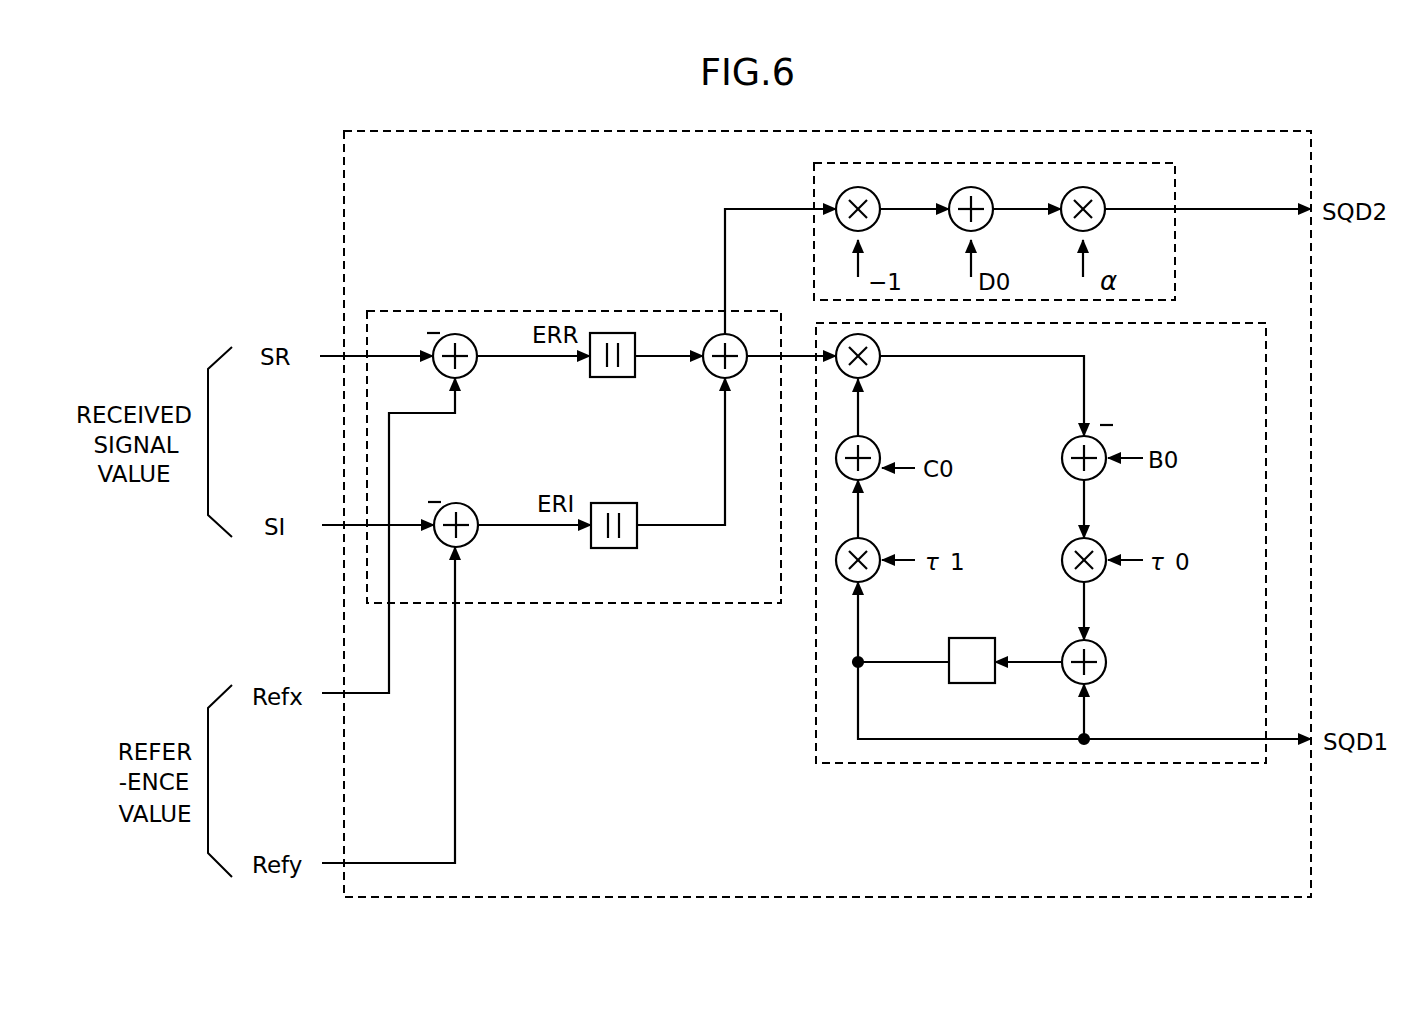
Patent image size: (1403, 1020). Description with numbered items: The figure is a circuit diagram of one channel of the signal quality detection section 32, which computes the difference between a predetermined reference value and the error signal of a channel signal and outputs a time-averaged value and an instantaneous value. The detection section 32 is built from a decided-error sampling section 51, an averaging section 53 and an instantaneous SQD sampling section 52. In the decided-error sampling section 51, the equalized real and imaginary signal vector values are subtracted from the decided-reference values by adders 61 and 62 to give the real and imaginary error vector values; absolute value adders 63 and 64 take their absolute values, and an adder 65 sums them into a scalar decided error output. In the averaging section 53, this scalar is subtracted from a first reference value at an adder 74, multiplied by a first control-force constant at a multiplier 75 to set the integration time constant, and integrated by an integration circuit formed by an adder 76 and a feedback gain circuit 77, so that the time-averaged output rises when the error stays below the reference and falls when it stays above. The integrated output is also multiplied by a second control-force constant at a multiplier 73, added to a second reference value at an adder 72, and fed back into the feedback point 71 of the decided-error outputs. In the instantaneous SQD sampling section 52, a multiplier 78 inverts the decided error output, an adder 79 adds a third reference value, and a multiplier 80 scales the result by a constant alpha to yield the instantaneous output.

The signal quality detection section 32 is at (1313, 425).
The decided-error sampling section 51 is at (400, 311).
The instantaneous SQD sampling section 52 is at (1175, 180).
The averaging section 53 is at (1228, 323).
The adder 61 is at (472, 370).
The adder 62 is at (474, 539).
The absolute value adder 63 is at (612, 378).
The absolute value adder 64 is at (613, 549).
The adder 65 is at (742, 370).
The feedback point 71 is at (877, 370).
The adder 72 is at (873, 474).
The multiplier 73 is at (877, 574).
The adder 74 is at (1103, 472).
The multiplier 75 is at (1103, 574).
The adder 76 is at (1103, 676).
The feedback gain circuit 77 is at (978, 638).
The multiplier 78 is at (877, 223).
The adder 79 is at (991, 222).
The multiplier 80 is at (1103, 222).